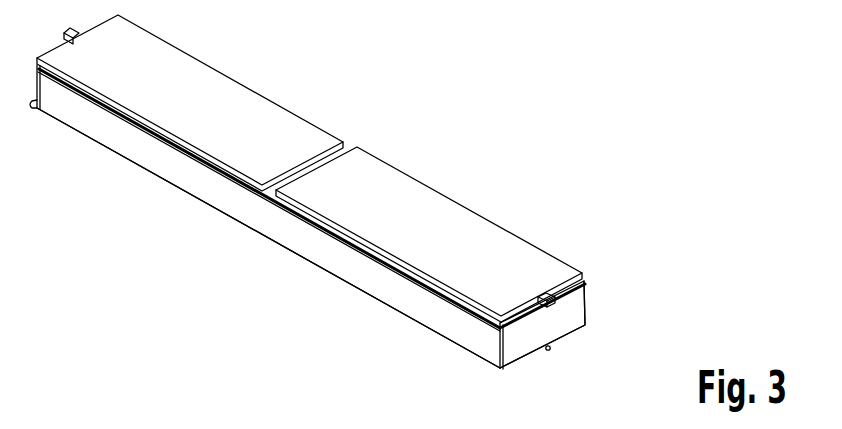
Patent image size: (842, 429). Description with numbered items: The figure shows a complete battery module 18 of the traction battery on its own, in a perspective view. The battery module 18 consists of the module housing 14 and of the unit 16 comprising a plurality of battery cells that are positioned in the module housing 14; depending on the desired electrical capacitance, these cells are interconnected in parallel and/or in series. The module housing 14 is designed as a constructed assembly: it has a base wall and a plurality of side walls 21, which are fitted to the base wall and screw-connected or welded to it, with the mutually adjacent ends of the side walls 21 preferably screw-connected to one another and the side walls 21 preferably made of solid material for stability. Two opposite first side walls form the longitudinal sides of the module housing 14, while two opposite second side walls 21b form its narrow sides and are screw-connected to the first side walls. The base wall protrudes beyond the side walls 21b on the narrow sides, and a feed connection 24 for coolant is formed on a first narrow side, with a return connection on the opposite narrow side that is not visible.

The module housing 14 is at (289, 281).
The unit 16 is at (301, 98).
The battery module 18 is at (502, 197).
The side walls 21 is at (262, 215).
The second side walls 21b is at (570, 302).
The feed connection 24 is at (551, 348).